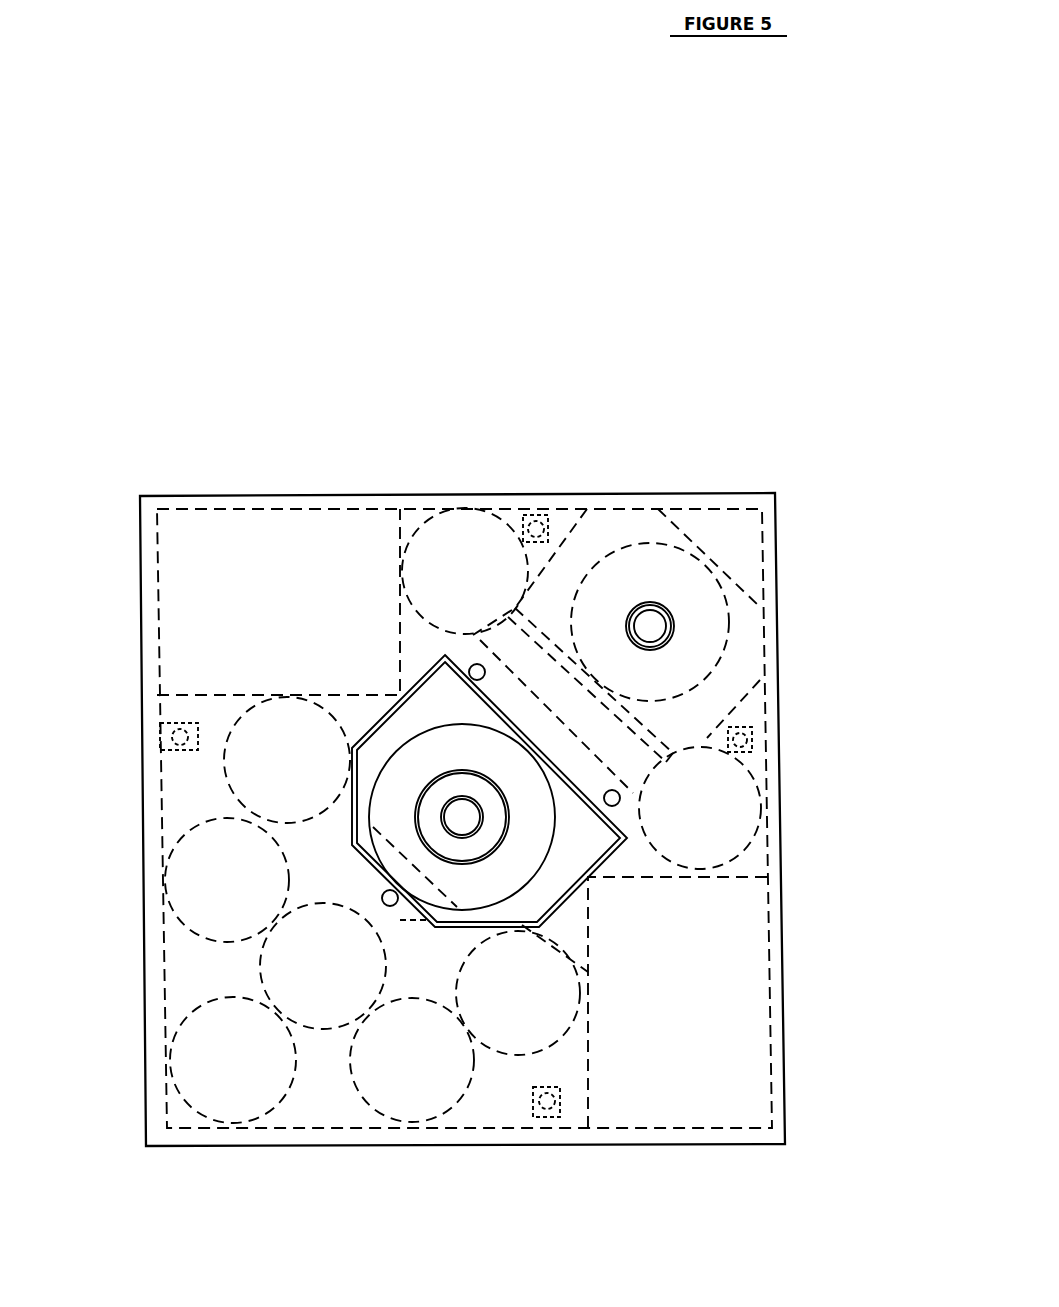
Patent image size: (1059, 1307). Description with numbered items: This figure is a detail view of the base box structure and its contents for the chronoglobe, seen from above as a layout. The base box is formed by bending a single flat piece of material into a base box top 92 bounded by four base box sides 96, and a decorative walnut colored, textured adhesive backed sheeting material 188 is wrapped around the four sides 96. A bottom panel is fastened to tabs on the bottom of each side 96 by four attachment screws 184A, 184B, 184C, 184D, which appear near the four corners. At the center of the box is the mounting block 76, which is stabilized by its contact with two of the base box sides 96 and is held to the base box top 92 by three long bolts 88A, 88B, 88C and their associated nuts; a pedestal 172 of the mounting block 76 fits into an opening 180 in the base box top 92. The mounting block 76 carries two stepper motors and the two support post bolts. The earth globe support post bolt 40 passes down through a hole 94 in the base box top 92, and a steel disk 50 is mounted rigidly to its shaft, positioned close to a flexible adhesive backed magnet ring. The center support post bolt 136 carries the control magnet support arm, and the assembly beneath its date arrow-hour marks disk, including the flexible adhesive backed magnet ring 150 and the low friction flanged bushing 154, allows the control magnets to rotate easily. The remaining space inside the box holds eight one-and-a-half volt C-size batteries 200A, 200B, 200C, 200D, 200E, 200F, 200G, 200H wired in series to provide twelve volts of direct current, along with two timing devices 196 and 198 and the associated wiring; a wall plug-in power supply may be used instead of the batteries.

The support post bolt 40 is at (652, 628).
The steel disk 50 is at (698, 615).
The mounting block 76 is at (407, 910).
The long bolt 88A is at (382, 902).
The long bolt 88B is at (472, 665).
The long bolt 88C is at (620, 797).
The base box top 92 is at (190, 986).
The hole 94 is at (633, 608).
The base box side 96 is at (487, 503).
The center support post bolt 136 is at (462, 810).
The magnet ring 150 is at (455, 890).
The low friction flanged bushing 154 is at (490, 832).
The pedestal 172 is at (588, 843).
The opening 180 is at (605, 855).
The attachment screw 184A is at (535, 520).
The attachment screw 184B is at (745, 735).
The attachment screw 184C is at (547, 1103).
The attachment screw 184D is at (177, 730).
The adhesive backed sheeting material 188 is at (447, 495).
The timing device 196 is at (273, 602).
The timing device 198 is at (707, 938).
The battery 200A is at (458, 563).
The battery 200B is at (715, 808).
The battery 200C is at (280, 772).
The battery 200D is at (518, 987).
The battery 200E is at (213, 885).
The battery 200F is at (323, 980).
The battery 200G is at (420, 1068).
The battery 200H is at (235, 1072).